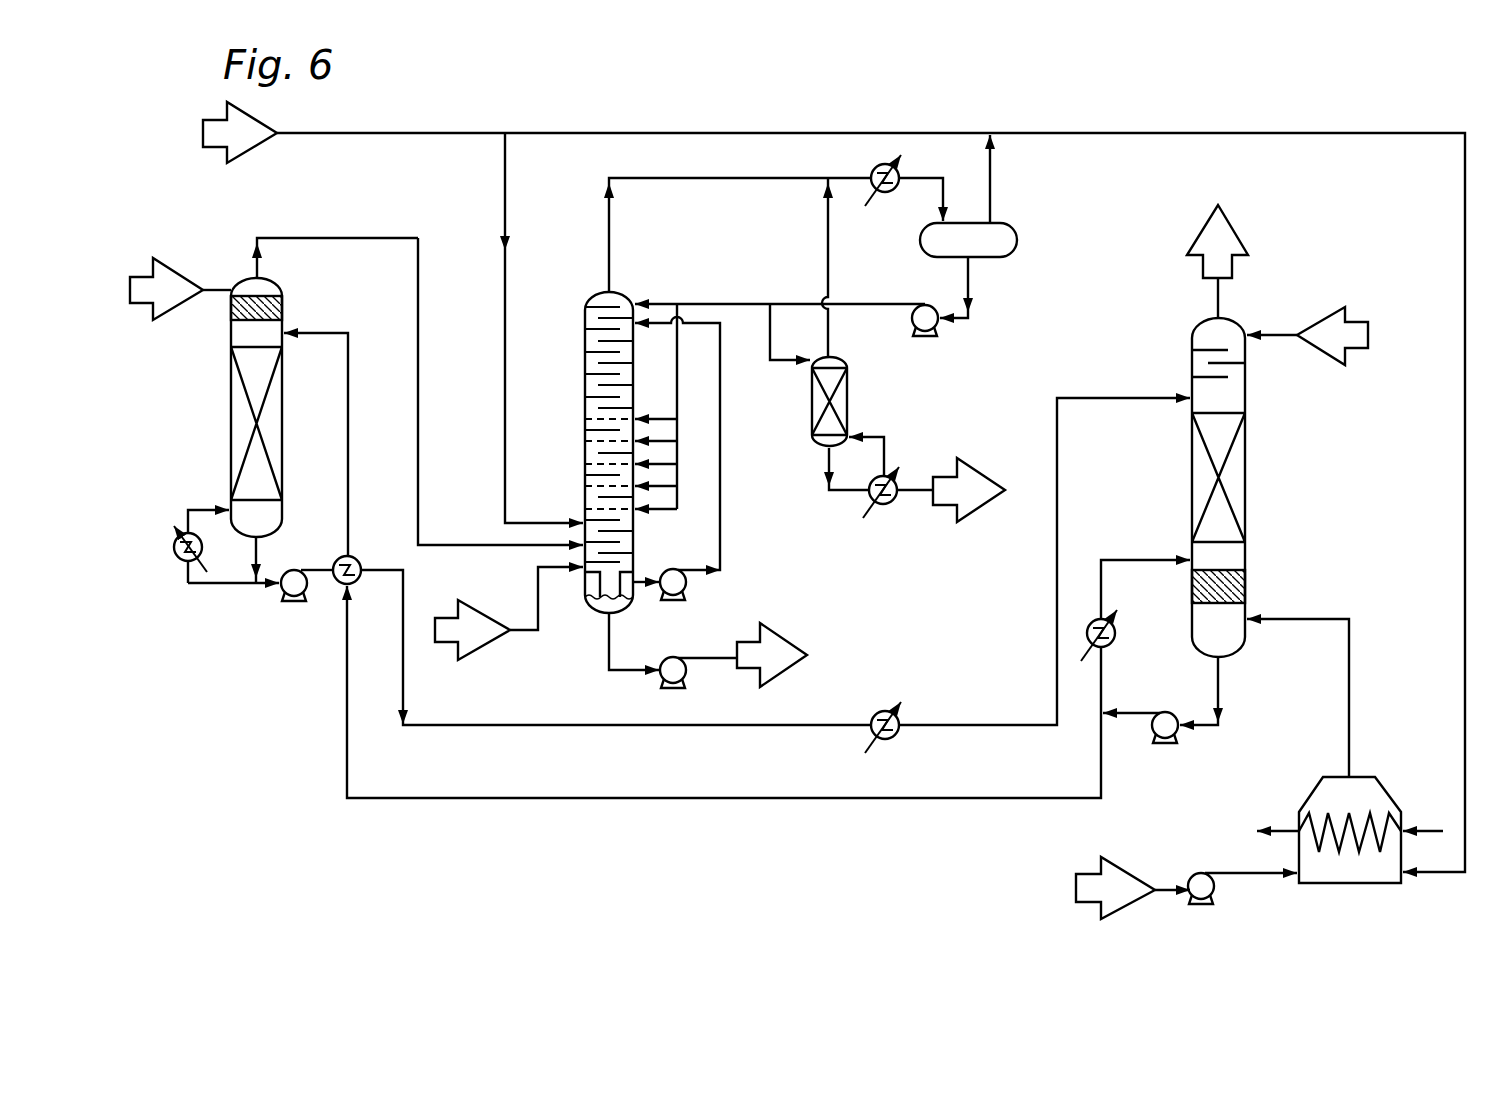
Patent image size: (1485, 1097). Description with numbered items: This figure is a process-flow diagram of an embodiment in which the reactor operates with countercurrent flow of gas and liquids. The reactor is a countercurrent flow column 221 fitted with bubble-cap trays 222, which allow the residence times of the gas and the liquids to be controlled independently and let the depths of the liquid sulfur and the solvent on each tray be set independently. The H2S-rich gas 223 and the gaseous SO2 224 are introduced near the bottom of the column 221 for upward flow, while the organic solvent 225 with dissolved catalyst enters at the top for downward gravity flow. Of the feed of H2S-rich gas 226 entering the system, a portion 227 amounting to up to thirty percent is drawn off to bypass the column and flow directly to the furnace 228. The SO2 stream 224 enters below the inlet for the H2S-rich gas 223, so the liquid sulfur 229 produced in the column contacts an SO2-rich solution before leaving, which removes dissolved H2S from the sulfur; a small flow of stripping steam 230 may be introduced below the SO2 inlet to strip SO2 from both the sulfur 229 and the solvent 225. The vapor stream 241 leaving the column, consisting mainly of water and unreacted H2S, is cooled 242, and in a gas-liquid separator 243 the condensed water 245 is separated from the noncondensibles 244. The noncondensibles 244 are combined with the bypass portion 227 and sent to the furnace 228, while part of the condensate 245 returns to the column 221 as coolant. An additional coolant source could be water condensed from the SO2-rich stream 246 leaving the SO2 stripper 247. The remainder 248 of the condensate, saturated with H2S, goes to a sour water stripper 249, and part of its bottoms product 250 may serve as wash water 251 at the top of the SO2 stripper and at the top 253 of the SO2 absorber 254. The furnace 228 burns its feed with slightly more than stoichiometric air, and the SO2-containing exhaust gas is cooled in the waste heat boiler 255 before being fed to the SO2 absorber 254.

The countercurrent flow column 221 is at (598, 295).
The bubble-cap trays 222 is at (592, 357).
The H2S-rich gas 223 is at (522, 523).
The gaseous SO2 224 is at (478, 545).
The organic solvent 225 is at (690, 303).
The feed of H2S-rich gas 226 is at (218, 148).
The portion 227 is at (668, 133).
The furnace 228 is at (1314, 801).
The liquid sulfur 229 is at (607, 637).
The stripping steam 230 is at (485, 653).
The vapor stream 241 is at (609, 250).
The cooling 242 is at (872, 168).
The gas-liquid separator 243 is at (1020, 240).
The noncondensibles 244 is at (990, 200).
The condensed water 245 is at (968, 283).
The SO2-rich stream 246 is at (255, 265).
The SO2 stripper 247 is at (230, 455).
The remainder 248 is at (782, 363).
The sour water stripper 249 is at (847, 413).
The bottoms product 250 is at (948, 505).
The wash water 251 is at (182, 312).
The top 253 is at (1350, 318).
The SO2 absorber 254 is at (1247, 478).
The waste heat boiler 255 is at (1382, 812).